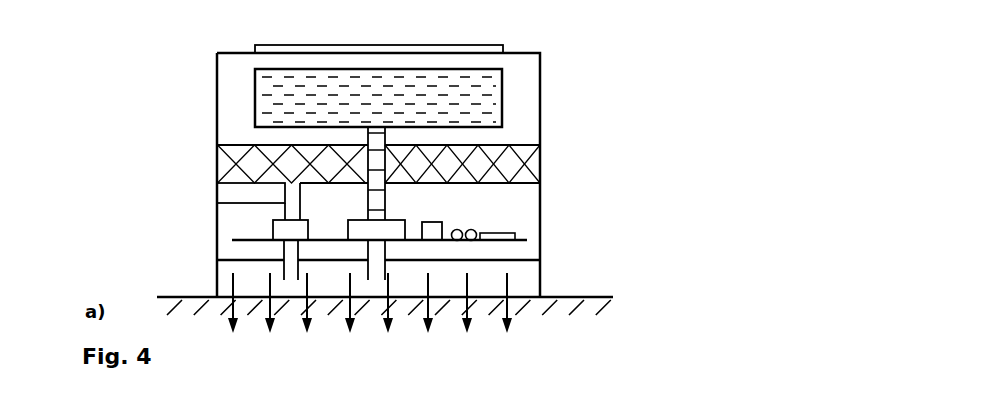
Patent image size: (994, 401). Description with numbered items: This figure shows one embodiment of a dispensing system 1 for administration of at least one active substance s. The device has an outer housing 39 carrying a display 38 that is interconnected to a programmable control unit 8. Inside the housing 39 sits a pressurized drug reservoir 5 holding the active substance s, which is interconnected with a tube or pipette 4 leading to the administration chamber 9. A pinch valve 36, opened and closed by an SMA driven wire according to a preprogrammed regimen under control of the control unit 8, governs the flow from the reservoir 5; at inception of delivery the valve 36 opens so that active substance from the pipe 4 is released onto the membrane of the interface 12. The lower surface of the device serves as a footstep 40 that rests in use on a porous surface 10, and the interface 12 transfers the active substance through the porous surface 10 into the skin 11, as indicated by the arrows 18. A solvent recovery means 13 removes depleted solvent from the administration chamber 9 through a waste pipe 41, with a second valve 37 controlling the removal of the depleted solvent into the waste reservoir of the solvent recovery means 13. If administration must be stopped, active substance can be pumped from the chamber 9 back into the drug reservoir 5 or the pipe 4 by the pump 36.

The dispensing system 1 is at (447, 148).
The active substance s is at (470, 84).
The pipe 4 is at (523, 151).
The drug reservoir 5 is at (293, 86).
The solvent recovery means 13 is at (452, 149).
The programmable control unit 8 is at (552, 195).
The arrows 18 is at (452, 234).
The interface 12 is at (528, 256).
The porous surface 10 is at (422, 271).
The skin 11 is at (427, 319).
The display 38 is at (289, 35).
The outer housing 39 is at (146, 175).
The pinch valve 36 is at (240, 175).
The second valve 37 is at (287, 232).
The waste pipe 41 is at (285, 203).
The administration chamber 9 is at (189, 240).
The footstep 40 is at (301, 258).